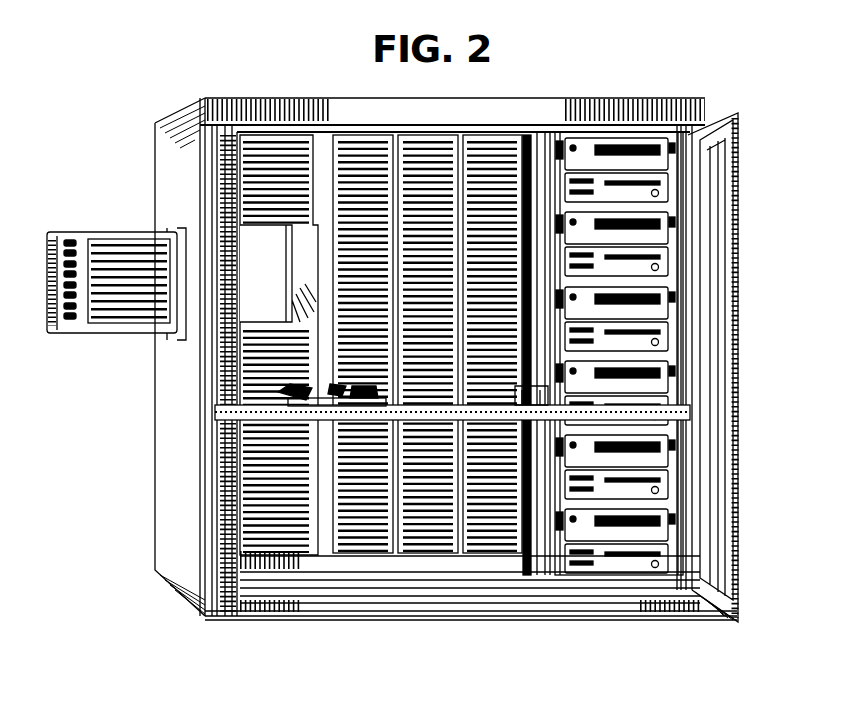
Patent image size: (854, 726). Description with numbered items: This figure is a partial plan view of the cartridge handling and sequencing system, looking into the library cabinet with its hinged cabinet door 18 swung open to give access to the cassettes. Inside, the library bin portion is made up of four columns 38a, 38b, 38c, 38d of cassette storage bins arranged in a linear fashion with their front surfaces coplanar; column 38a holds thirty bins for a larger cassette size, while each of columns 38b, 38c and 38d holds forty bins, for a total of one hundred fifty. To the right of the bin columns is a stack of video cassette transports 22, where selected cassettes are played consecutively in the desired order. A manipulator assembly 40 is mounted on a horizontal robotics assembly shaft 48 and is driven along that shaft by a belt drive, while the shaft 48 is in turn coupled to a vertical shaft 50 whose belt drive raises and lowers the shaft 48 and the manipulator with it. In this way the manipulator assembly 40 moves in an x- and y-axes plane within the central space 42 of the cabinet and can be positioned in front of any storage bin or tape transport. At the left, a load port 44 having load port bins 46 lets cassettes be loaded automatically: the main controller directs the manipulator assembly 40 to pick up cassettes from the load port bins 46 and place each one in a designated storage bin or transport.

The hinged cabinet door 18 is at (228, 110).
The video cassette transports 22 is at (665, 203).
The column of cassette storage bins 38a is at (258, 497).
The column of cassette storage bins 38b is at (350, 537).
The column of cassette storage bins 38c is at (418, 537).
The column of cassette storage bins 38d is at (480, 540).
The manipulator assembly 40 is at (300, 410).
The central space 42 is at (493, 541).
The load port 44 is at (68, 232).
The load port bins 46 is at (130, 292).
The robotics assembly shaft 48 is at (670, 423).
The vertical shaft 50 is at (540, 140).